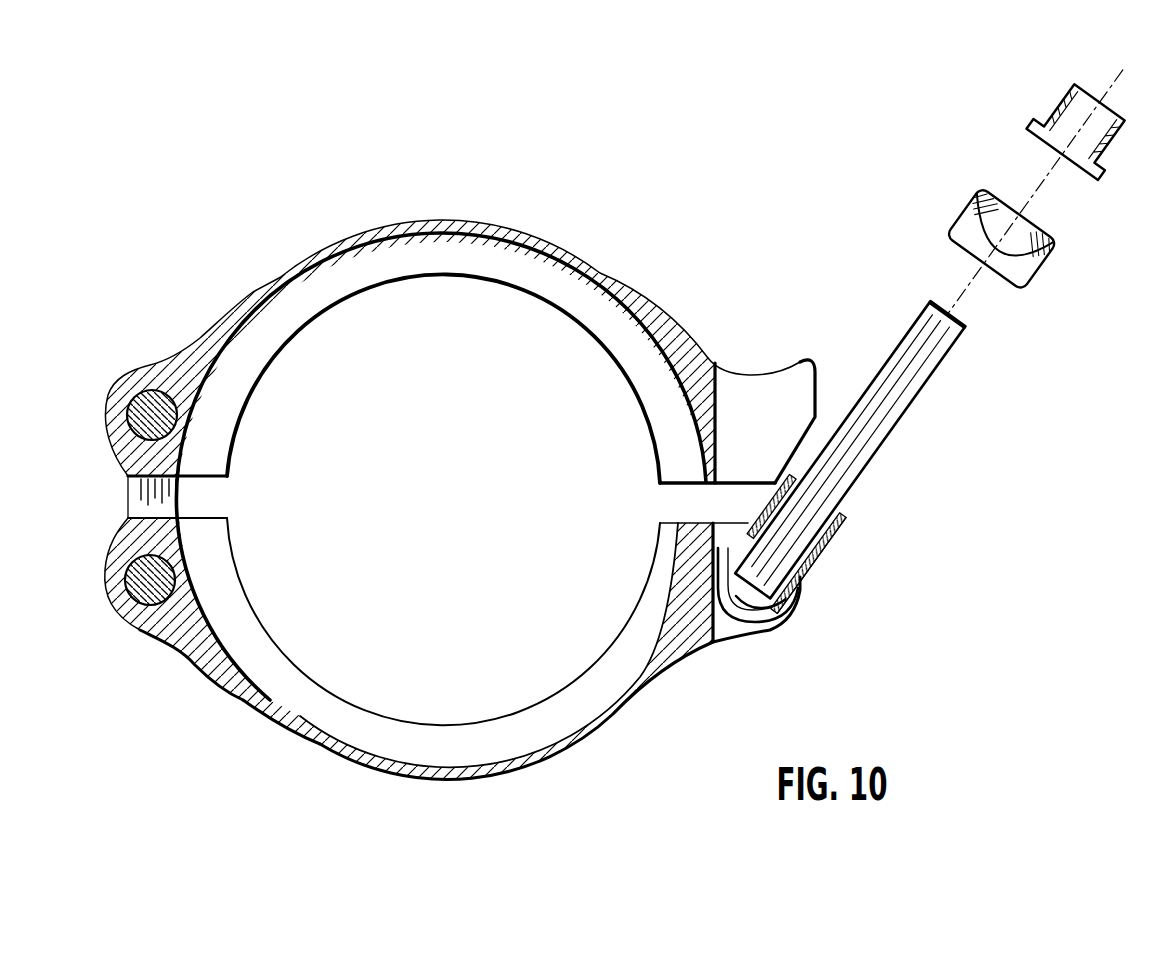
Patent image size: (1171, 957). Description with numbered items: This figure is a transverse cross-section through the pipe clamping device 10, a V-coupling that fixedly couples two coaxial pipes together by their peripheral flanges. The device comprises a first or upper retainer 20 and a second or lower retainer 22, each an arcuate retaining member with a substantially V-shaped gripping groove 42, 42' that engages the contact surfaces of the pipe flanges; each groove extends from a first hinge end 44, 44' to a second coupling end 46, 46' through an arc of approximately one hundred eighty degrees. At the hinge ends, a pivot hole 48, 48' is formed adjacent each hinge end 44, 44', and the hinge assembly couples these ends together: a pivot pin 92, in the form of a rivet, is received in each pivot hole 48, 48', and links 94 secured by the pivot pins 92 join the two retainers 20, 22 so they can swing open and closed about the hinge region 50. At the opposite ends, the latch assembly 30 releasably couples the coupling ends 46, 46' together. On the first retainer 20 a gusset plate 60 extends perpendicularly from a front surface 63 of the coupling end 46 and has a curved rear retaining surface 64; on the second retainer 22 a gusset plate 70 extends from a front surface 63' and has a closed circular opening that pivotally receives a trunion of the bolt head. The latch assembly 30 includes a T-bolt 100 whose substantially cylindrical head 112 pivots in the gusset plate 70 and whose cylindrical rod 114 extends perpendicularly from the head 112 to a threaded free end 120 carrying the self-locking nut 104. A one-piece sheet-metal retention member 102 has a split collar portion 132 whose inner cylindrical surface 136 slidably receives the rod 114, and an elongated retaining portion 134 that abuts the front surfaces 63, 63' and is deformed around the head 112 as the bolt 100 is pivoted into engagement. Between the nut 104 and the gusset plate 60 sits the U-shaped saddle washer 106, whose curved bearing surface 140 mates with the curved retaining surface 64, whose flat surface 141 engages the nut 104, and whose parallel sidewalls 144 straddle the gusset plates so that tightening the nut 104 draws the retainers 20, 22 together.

The pipe clamping device 10 is at (203, 175).
The first retainer 20 is at (350, 232).
The second retainer 22 is at (272, 723).
The latch assembly 30 is at (980, 350).
The gripping groove 42 is at (443, 378).
The gripping groove 42' is at (443, 621).
The first hinge end 44 is at (213, 454).
The first hinge end 44' is at (216, 536).
The second coupling end 46 is at (678, 454).
The second coupling end 46' is at (668, 528).
The pivot hole 48 is at (177, 377).
The pivot hole 48' is at (89, 574).
The hinge 50 is at (118, 447).
The gusset plate 60 is at (798, 385).
The front surface 63 is at (719, 393).
The front surface 63' is at (698, 626).
The curved retaining surface 64 is at (762, 372).
The gusset plate 70 is at (800, 602).
The pivot pin 92 is at (165, 392).
The link 94 is at (133, 487).
The bolt 100 is at (890, 468).
The retention member 102 is at (834, 558).
The nut 104 is at (1047, 100).
The saddle washer 106 is at (960, 222).
The head 112 is at (776, 630).
The rod 114 is at (897, 412).
The threaded free end 120 is at (915, 303).
The collar portion 132 is at (841, 518).
The elongated retaining portion 134 is at (733, 622).
The inner cylindrical surface 136 is at (762, 497).
The curved bearing surface 140 is at (1035, 265).
The flat surface 141 is at (1047, 225).
The sidewall 144 is at (1010, 283).